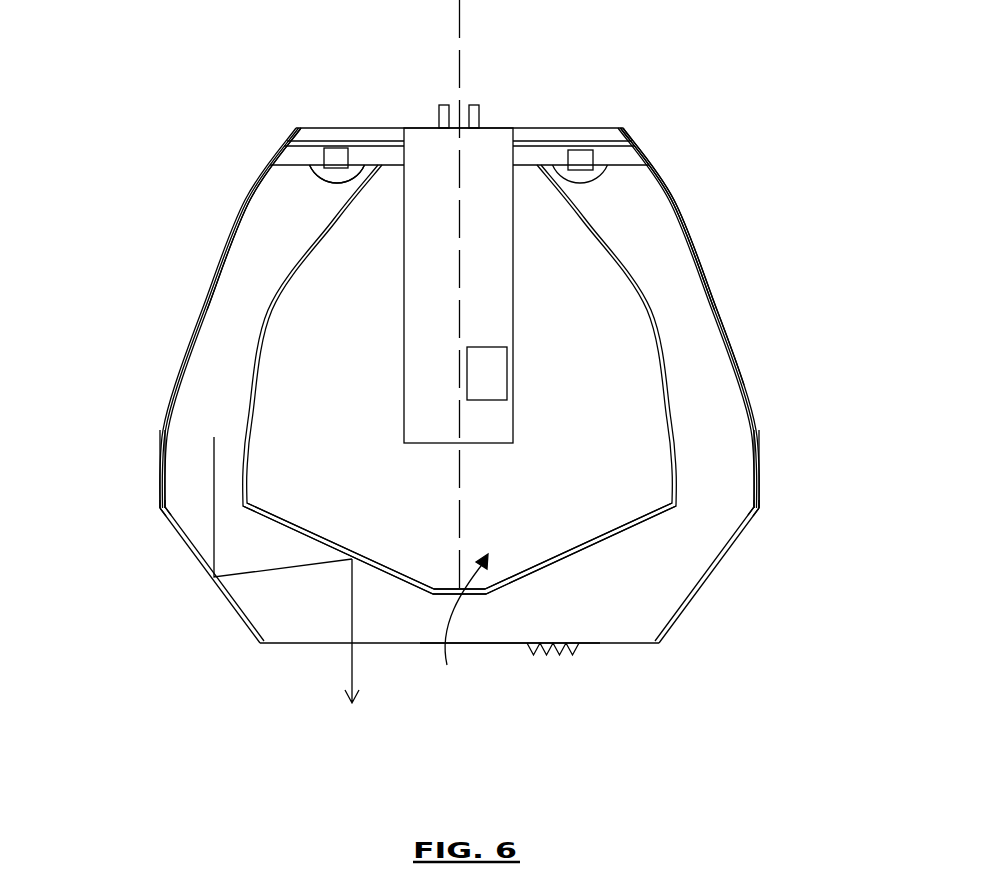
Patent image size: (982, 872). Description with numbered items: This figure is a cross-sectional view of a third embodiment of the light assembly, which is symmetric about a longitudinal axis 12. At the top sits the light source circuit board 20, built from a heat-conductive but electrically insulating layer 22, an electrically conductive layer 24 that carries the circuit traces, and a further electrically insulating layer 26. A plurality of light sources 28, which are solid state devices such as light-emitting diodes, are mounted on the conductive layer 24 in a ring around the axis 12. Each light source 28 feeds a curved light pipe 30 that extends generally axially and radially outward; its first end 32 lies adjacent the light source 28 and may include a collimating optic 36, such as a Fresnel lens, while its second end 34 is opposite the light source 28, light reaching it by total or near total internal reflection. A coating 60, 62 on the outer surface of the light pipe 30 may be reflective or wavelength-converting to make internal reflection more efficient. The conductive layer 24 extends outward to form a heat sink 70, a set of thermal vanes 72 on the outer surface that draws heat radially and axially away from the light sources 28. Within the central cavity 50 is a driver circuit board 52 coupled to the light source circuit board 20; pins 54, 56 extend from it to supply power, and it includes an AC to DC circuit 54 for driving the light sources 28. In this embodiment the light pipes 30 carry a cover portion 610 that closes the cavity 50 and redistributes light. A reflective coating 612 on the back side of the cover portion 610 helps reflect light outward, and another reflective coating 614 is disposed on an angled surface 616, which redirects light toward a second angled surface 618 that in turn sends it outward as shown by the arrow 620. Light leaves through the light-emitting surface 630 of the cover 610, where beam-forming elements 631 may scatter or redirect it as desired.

The longitudinal axis 12 is at (460, 22).
The light source circuit board 20 is at (625, 130).
The insulating layer 22 is at (592, 133).
The conductive layer 24 is at (535, 147).
The electrically insulating layer 26 is at (527, 165).
The light sources 28 is at (336, 156).
The light pipes 30 is at (712, 378).
The first end 32 is at (283, 183).
The second end 34 is at (224, 480).
The collimating optic 36 is at (336, 183).
The cavity 50 is at (462, 625).
The driver circuit board 52 is at (423, 443).
The pin 54 is at (444, 104).
The pin 56 is at (474, 104).
The coating 60 is at (262, 379).
The coating 62 is at (761, 452).
The heat sink 70 is at (704, 231).
The thermal vanes 72 is at (718, 275).
The cover portion 610 is at (618, 617).
The reflective coating 612 is at (284, 520).
The reflective coating 614 is at (197, 565).
The angled surface 616 is at (176, 530).
The angled surface 618 is at (313, 553).
The arrow 620 is at (351, 667).
The light-emitting surface 630 is at (497, 645).
The beam-forming elements 631 is at (558, 655).